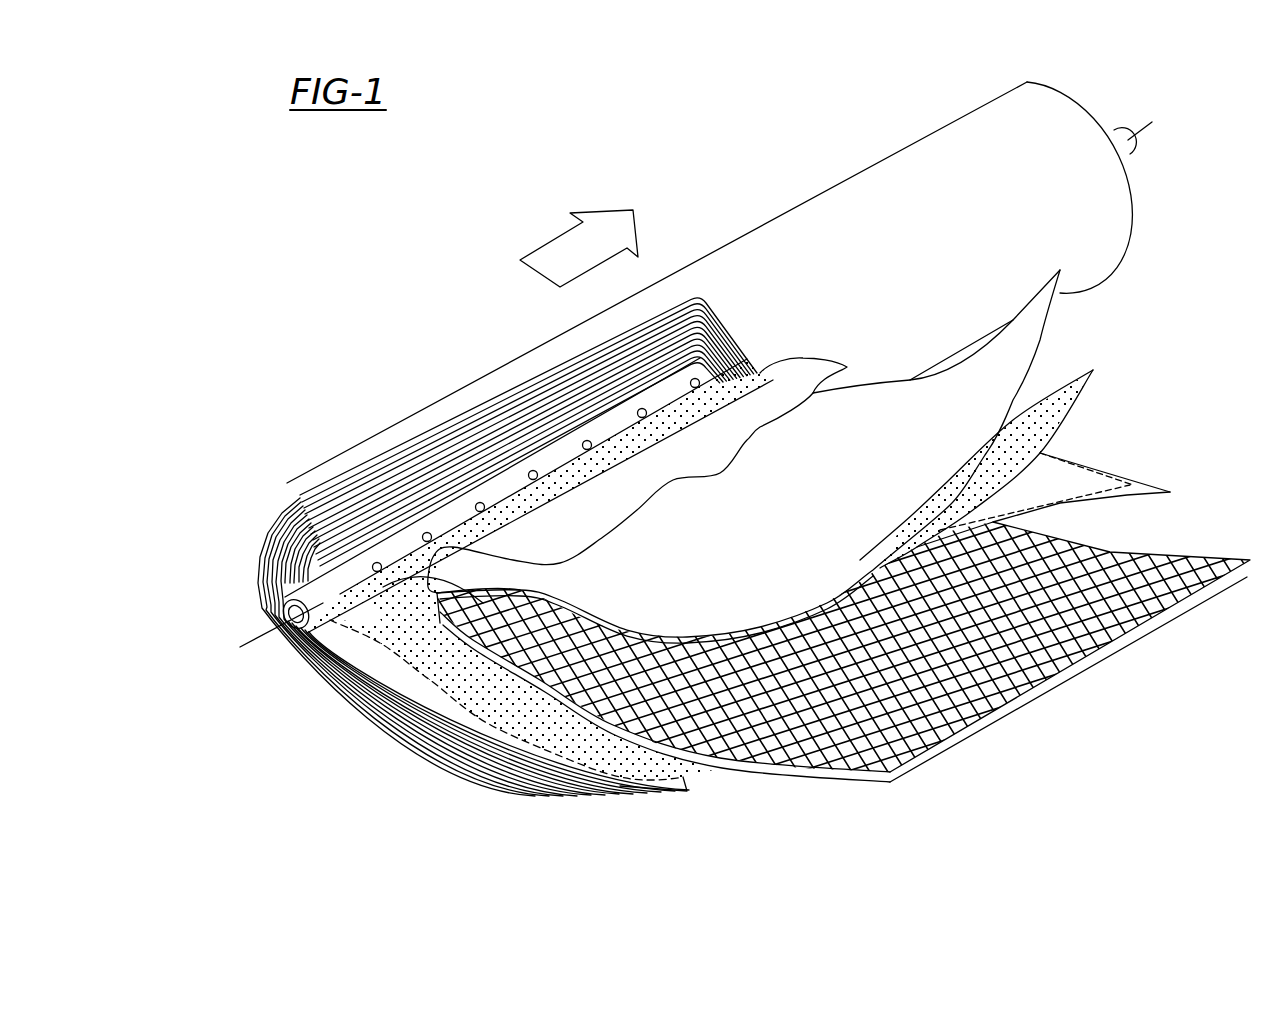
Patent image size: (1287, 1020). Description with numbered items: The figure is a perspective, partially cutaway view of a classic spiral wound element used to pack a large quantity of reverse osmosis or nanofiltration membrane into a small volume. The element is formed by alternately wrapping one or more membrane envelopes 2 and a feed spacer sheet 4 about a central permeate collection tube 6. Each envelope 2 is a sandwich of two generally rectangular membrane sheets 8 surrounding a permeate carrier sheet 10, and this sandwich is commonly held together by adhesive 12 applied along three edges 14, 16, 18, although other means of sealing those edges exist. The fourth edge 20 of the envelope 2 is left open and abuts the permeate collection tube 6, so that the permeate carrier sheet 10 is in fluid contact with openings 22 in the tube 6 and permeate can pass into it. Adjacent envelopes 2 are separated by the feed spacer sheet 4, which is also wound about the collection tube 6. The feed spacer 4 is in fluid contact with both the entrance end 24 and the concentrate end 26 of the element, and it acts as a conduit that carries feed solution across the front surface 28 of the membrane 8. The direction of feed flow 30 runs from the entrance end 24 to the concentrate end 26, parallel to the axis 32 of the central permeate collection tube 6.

The membrane envelope 2 is at (709, 328).
The feed spacer sheet 4 is at (768, 607).
The central permeate collection tube 6 is at (268, 655).
The membrane sheet 8 is at (1045, 322).
The permeate carrier sheet 10 is at (748, 606).
The adhesive 12 is at (788, 684).
The envelope edge 14 is at (437, 701).
The envelope edge 16 is at (1107, 516).
The envelope edge 18 is at (1133, 466).
The fourth edge 20 is at (534, 563).
The openings 22 is at (490, 477).
The entrance end 24 is at (300, 533).
The concentrate end 26 is at (1138, 115).
The front surface 28 is at (666, 752).
The direction of feed flow 30 is at (552, 236).
The axis 32 is at (256, 620).